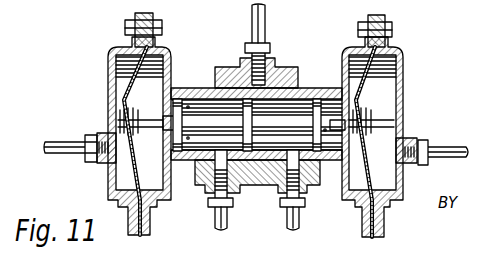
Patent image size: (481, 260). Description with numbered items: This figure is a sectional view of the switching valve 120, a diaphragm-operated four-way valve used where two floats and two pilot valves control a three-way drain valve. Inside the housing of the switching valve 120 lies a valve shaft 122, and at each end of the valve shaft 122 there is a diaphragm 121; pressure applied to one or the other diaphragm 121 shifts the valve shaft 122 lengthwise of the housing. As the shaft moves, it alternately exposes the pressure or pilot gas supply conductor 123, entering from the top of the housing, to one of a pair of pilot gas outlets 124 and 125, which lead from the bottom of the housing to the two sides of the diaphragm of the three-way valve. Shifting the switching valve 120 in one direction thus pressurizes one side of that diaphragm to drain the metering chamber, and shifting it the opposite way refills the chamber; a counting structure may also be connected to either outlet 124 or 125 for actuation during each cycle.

The switching valve 120 is at (283, 72).
The diaphragm 121 is at (132, 80).
The valve shaft 122 is at (208, 120).
The pressure or pilot gas supply conductor 123 is at (260, 24).
The pilot gas outlet 124 is at (228, 217).
The pilot gas outlet 125 is at (299, 217).